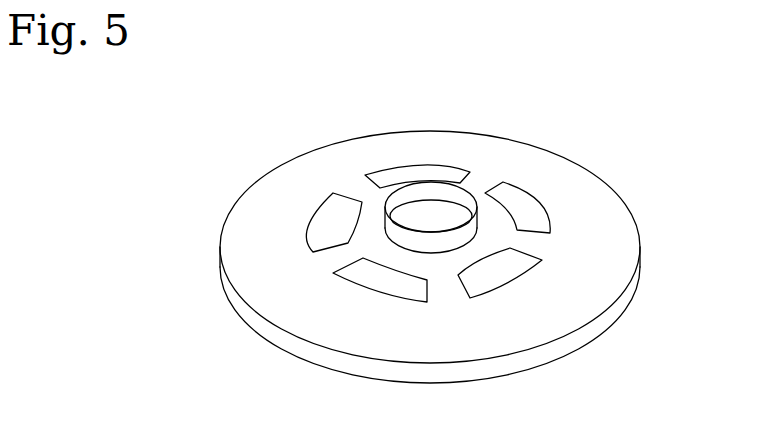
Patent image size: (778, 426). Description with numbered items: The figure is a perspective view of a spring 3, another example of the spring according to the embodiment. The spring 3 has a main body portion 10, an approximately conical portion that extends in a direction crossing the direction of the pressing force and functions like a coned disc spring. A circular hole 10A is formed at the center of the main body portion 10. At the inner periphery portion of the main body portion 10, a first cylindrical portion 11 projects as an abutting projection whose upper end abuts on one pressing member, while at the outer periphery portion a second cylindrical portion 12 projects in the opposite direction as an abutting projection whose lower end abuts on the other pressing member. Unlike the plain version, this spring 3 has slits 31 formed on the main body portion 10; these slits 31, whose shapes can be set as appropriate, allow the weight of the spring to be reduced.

The spring 3 is at (600, 122).
The main body portion 10 is at (620, 240).
The hole 10A is at (428, 222).
The first cylindrical portion 11 is at (479, 200).
The second cylindrical portion 12 is at (600, 323).
The slits 31 is at (513, 208).